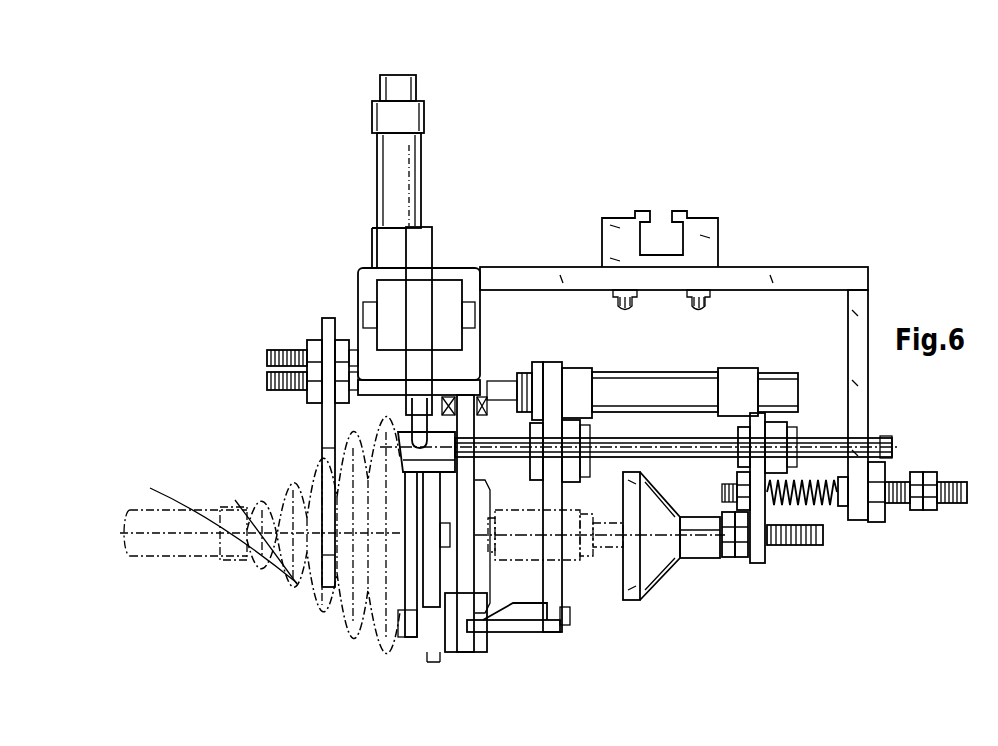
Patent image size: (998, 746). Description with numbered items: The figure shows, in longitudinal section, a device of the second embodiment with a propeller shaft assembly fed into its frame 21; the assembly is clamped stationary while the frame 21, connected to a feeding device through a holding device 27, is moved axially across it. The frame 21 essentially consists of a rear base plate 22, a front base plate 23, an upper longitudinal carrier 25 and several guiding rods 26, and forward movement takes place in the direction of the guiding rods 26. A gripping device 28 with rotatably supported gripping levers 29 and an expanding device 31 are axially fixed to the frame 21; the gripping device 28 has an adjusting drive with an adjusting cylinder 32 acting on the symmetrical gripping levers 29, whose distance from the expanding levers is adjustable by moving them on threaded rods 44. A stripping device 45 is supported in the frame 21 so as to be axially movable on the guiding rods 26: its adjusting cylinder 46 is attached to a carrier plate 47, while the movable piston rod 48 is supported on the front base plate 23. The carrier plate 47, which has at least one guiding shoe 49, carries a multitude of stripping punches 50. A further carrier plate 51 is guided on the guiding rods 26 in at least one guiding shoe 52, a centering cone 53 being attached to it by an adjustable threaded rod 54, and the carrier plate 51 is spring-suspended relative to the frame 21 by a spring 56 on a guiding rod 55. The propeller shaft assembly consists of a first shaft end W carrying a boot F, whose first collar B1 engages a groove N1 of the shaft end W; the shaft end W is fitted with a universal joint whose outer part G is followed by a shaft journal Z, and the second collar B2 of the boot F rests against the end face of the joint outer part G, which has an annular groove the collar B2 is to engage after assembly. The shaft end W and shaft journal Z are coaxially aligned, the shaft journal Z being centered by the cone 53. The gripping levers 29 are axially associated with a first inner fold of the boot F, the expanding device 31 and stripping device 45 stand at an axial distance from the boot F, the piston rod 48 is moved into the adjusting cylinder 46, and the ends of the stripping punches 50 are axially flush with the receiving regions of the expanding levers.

The frame 21 is at (750, 238).
The rear base plate 22 is at (888, 503).
The front base plate 23 is at (460, 612).
The upper longitudinal carrier 25 is at (812, 272).
The guiding rods 26 is at (607, 450).
The holding device 27 is at (697, 230).
The gripping device 28 is at (305, 325).
The gripping levers 29 is at (388, 460).
The expanding device 31 is at (443, 238).
The adjusting cylinder 32 is at (408, 182).
The threaded rods 44 is at (275, 357).
The stripping device 45 is at (524, 636).
The adjusting cylinder 46 is at (604, 385).
The carrier plate 47 is at (550, 622).
The piston rod 48 is at (496, 378).
The guiding shoe 49 is at (567, 368).
The stripping punches 50 is at (498, 622).
The carrier plate 51 is at (754, 483).
The guiding shoe 52 is at (803, 457).
The centering cone 53 is at (655, 582).
The threaded rod 54 is at (793, 510).
The guiding rod 55 is at (740, 486).
The spring 56 is at (835, 503).
The first collar B1 is at (235, 500).
The second collar B2 is at (365, 447).
The groove N1 is at (222, 513).
The boot F is at (200, 520).
The shaft end W is at (197, 540).
The joint outer part G is at (391, 590).
The shaft journal Z is at (581, 592).